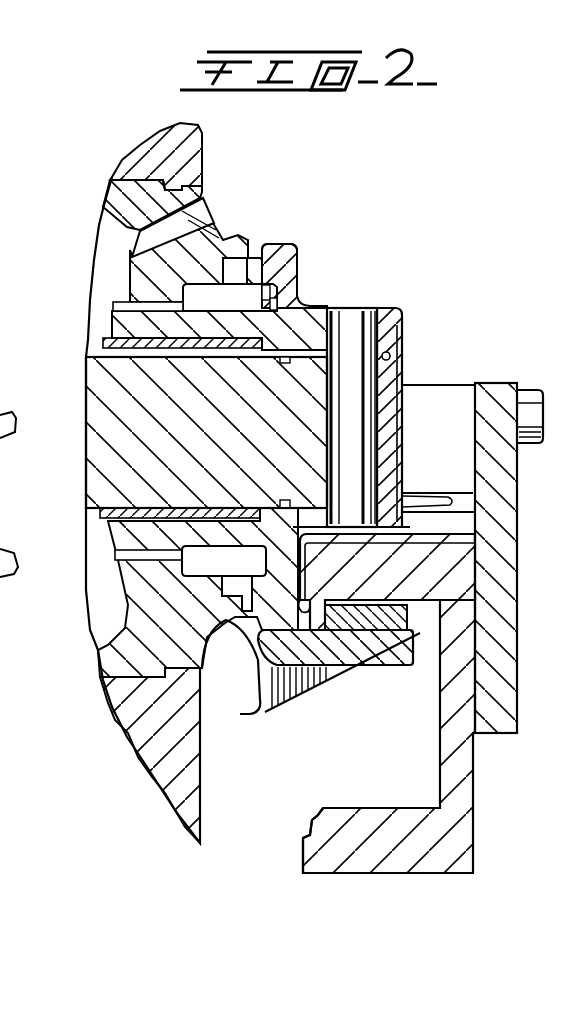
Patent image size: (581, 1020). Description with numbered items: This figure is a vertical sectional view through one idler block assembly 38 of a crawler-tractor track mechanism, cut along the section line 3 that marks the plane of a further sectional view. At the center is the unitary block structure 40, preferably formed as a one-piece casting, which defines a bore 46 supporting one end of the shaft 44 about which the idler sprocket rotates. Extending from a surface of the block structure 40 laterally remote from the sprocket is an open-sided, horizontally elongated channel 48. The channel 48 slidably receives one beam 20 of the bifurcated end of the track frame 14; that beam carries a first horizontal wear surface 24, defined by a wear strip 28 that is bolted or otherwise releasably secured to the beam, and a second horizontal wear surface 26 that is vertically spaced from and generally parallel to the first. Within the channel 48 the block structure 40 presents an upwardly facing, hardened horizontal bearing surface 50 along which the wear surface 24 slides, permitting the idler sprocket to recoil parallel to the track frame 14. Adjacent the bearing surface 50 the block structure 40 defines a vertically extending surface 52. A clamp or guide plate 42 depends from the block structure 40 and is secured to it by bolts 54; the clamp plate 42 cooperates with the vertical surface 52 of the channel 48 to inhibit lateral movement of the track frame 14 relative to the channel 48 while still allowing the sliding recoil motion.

The section line 3- 3 is at (387, 178).
The track frame 14 is at (477, 831).
The beam 20 is at (347, 870).
The first horizontal wear surface 24 is at (340, 628).
The second horizontal wear surface 26 is at (460, 540).
The wear strip 28 is at (393, 622).
The idler block assembly 38 is at (288, 246).
The unitary block structure 40 is at (288, 288).
The clamp plate 42 is at (500, 690).
The shaft 44 is at (123, 420).
The bore 46 is at (399, 338).
The channel 48 is at (262, 706).
The horizontal bearing surface 50 is at (363, 625).
The vertically extending surface 52 is at (312, 612).
The bolts 54 is at (529, 395).